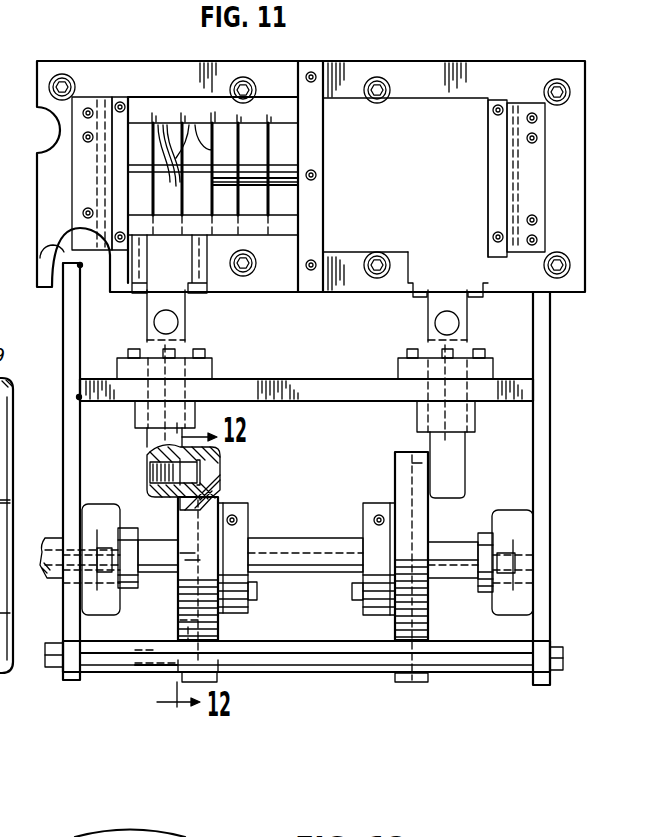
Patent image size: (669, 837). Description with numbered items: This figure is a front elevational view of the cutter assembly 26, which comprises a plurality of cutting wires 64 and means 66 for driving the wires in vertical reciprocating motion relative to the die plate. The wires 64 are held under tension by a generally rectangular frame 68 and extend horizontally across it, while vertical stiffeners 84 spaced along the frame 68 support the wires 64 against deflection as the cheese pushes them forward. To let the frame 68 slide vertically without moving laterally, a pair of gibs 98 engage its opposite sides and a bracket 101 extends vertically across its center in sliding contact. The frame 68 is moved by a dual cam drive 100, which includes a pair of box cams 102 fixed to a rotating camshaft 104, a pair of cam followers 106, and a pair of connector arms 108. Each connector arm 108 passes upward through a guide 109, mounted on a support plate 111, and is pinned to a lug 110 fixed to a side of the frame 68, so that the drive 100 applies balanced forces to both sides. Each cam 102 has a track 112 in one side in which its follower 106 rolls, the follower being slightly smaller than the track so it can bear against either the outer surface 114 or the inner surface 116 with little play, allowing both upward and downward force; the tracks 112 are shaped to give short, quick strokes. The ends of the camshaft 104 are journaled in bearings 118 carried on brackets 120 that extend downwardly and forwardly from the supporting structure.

The cutter assembly 26 is at (422, 693).
The cutting wires 64 is at (211, 166).
The means for driving the cutting elements 66 is at (348, 673).
The frame 68 is at (137, 112).
The vertical stiffeners 84 is at (353, 128).
The gibs 98 is at (80, 97).
The dual cam drive 100 is at (318, 356).
The bracket 101 is at (313, 90).
The box cams 102 is at (178, 605).
The camshaft 104 is at (293, 545).
The cam followers 106 is at (217, 472).
The connector arms 108 is at (185, 342).
The guide 109 is at (213, 368).
The lug 110 is at (147, 300).
The support plate 111 is at (302, 392).
The track 112 is at (178, 647).
The outer surface of the track 114 is at (177, 682).
The inner surface of the track 116 is at (197, 627).
The bearings 118 is at (97, 510).
The brackets 120 is at (65, 315).